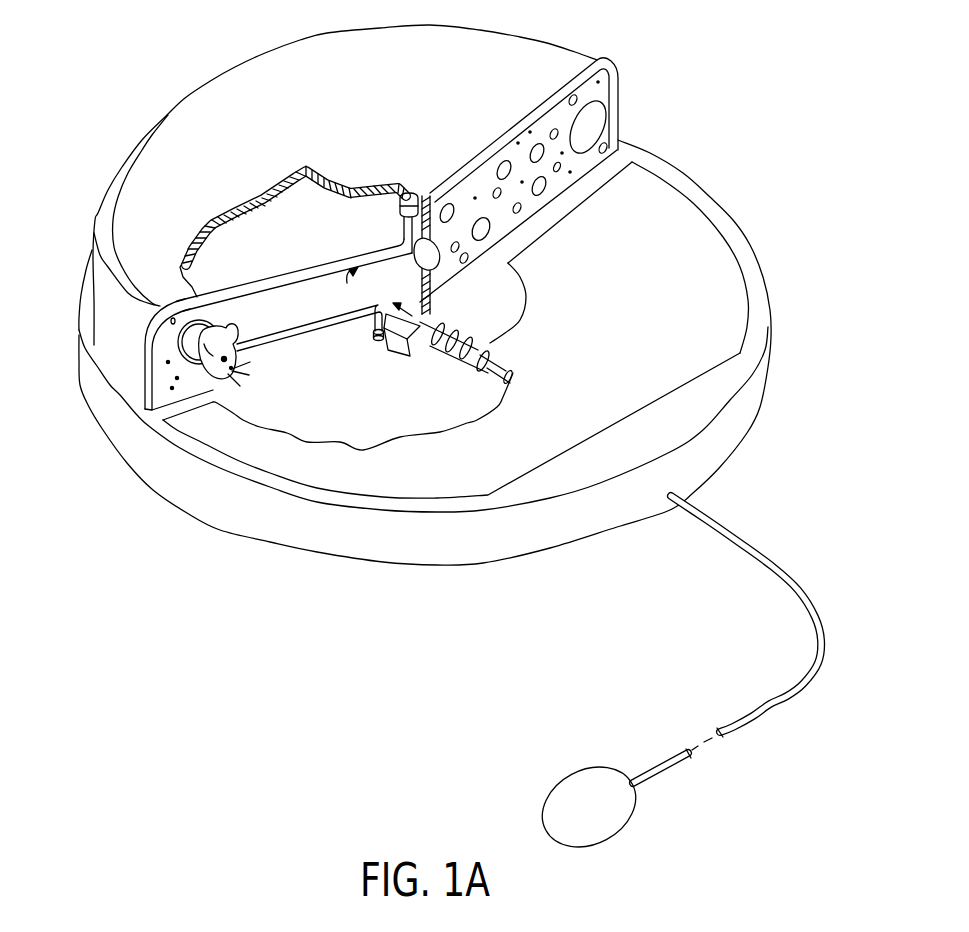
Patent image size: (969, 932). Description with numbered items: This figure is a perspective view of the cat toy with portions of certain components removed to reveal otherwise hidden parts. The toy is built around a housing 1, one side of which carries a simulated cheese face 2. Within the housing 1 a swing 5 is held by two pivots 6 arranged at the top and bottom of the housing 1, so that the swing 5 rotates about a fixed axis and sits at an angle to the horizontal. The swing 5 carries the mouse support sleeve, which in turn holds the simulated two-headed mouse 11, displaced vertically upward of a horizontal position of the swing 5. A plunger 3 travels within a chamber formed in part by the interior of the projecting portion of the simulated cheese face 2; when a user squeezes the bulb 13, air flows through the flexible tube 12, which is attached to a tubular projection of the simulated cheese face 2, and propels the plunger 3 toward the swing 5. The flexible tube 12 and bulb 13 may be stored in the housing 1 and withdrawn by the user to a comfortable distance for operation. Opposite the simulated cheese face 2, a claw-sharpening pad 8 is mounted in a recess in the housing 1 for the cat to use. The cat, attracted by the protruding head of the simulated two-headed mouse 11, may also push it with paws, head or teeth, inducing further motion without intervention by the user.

The housing 1 is at (490, 30).
The simulated cheese face 2 is at (567, 116).
The plunger 3 is at (405, 360).
The swing 5 is at (317, 264).
The pivots 6 is at (400, 213).
The claw-sharpening pad 8 is at (722, 267).
The simulated two-headed mouse 11 is at (240, 352).
The flexible tube 12 is at (825, 636).
The bulb 13 is at (620, 833).